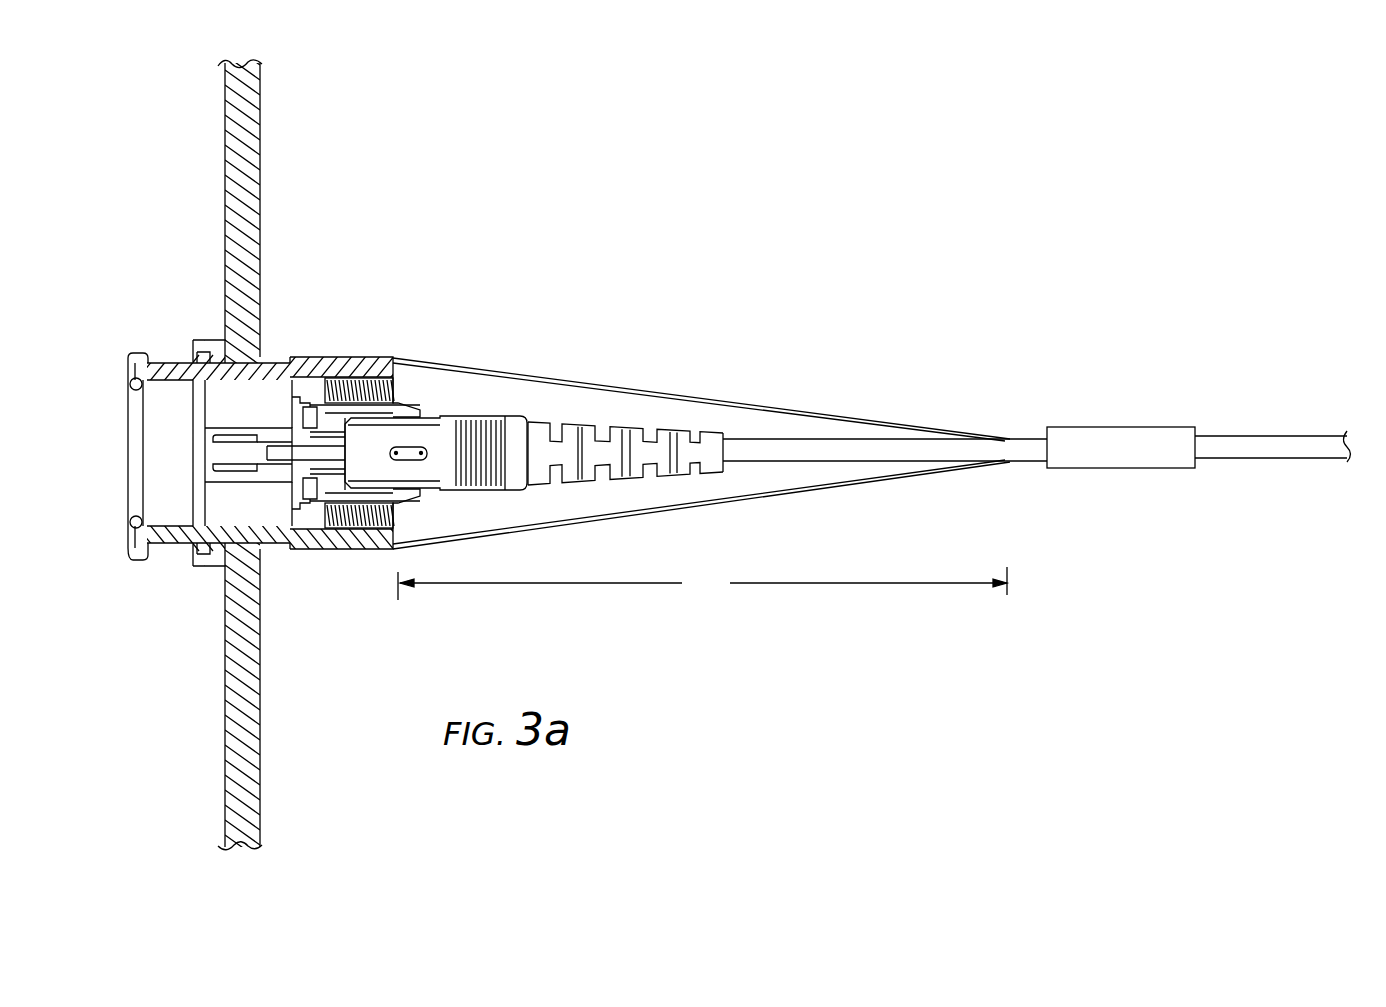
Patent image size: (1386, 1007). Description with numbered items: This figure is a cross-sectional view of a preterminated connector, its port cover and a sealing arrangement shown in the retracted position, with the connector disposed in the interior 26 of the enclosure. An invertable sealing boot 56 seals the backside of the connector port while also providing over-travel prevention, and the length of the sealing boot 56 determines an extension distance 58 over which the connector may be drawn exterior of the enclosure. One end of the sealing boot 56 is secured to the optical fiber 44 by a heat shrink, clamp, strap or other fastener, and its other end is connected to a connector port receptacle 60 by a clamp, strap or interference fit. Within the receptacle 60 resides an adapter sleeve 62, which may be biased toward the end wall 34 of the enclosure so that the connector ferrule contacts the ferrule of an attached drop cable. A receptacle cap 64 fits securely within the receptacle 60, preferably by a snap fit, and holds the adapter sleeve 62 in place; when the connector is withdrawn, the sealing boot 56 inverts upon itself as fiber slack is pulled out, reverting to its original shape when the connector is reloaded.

The interior 26 is at (446, 215).
The end wall 34 is at (252, 150).
The optical fiber 44 is at (1227, 440).
The invertable sealing boot 56 is at (600, 386).
The extension distance 58 is at (702, 583).
The connector port receptacle 60 is at (367, 376).
The adapter sleeve 62 is at (292, 453).
The receptacle cap 64 is at (162, 370).